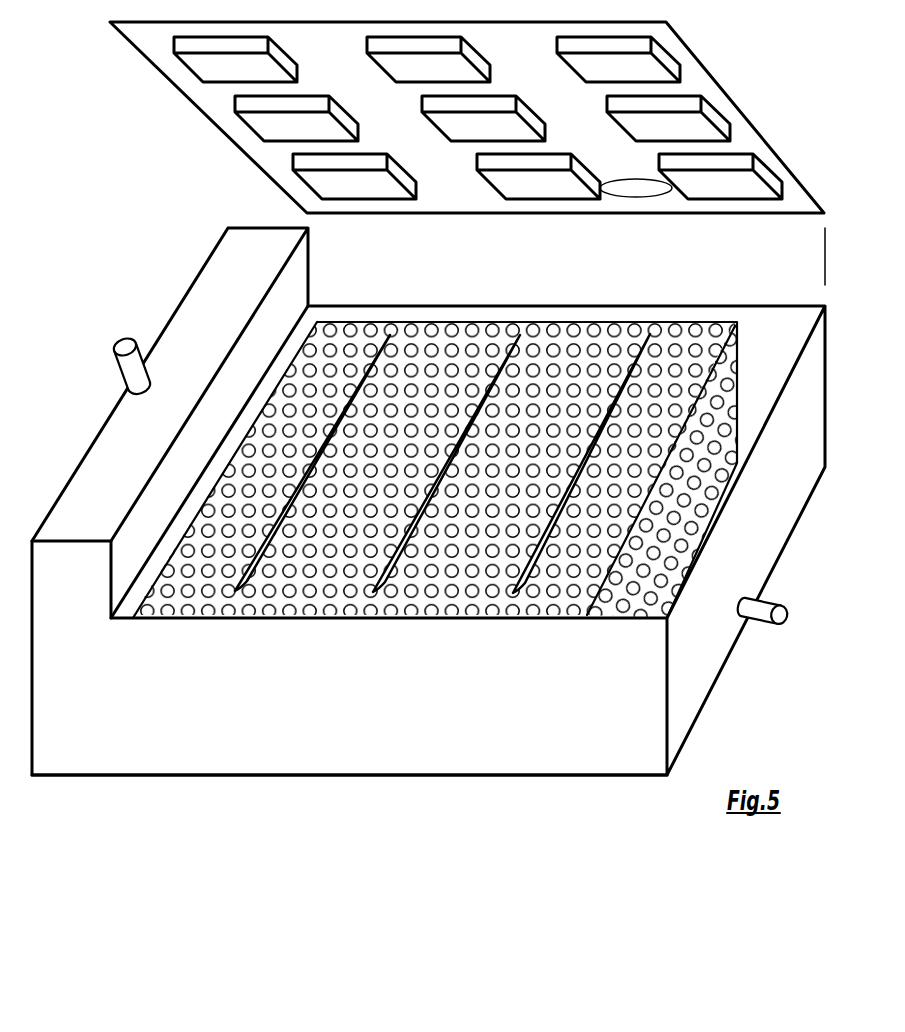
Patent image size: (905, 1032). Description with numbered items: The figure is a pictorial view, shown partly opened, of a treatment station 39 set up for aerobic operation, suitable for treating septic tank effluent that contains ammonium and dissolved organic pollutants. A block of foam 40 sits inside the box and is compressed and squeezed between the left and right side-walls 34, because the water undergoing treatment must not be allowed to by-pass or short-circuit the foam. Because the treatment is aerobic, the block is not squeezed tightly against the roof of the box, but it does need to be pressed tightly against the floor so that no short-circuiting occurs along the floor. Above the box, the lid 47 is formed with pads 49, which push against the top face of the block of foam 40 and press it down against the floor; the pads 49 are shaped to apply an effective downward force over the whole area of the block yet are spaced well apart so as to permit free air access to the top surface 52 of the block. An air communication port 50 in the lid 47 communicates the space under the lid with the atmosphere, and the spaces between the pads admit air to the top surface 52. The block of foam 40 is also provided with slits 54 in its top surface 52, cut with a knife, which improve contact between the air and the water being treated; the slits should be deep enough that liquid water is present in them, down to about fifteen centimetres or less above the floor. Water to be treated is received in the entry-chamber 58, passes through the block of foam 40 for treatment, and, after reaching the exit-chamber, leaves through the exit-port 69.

The side-walls 34 is at (453, 757).
The treatment station 39 is at (270, 777).
The block of foam 40 is at (452, 348).
The lid 47 is at (165, 57).
The pads 49 is at (313, 175).
The air communication port 50 is at (639, 192).
The top surface 52 is at (470, 592).
The slits 54 is at (263, 550).
The entry-chamber 58 is at (113, 457).
The exit-port 69 is at (760, 610).